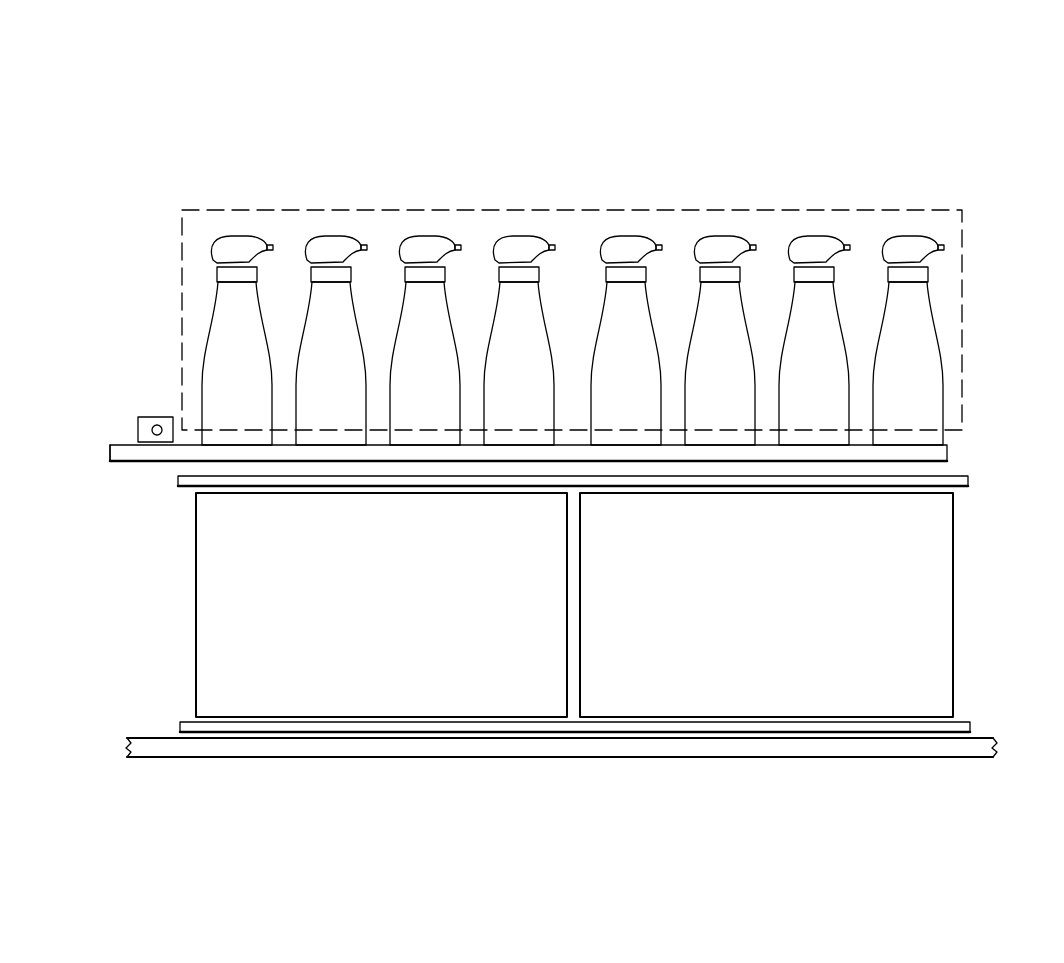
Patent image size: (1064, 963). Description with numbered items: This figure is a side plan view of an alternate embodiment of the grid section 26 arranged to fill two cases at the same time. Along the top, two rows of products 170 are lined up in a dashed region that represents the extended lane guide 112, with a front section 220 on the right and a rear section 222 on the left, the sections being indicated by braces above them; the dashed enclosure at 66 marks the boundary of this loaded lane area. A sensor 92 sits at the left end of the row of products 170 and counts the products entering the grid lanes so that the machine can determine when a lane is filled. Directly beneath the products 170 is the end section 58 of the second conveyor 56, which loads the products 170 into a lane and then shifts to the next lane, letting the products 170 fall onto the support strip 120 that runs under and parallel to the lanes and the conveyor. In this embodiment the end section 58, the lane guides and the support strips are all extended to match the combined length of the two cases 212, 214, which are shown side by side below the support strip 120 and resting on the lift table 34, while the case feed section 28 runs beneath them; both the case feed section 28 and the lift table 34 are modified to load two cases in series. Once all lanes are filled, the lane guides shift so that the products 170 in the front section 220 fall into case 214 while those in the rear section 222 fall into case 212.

The grid section 26 is at (571, 122).
The group of containers 66 is at (954, 204).
The lane guide 112 is at (182, 289).
The rear section 222 is at (555, 200).
The front section 220 is at (943, 200).
The products 170 is at (212, 250).
The sensor 92 is at (148, 417).
The end section 58 is at (948, 453).
The second conveyor 56 is at (117, 463).
The support strip 120 is at (178, 490).
The case 212 is at (298, 700).
The case 214 is at (720, 700).
The lift table 34 is at (185, 722).
The case feed section 28 is at (140, 758).